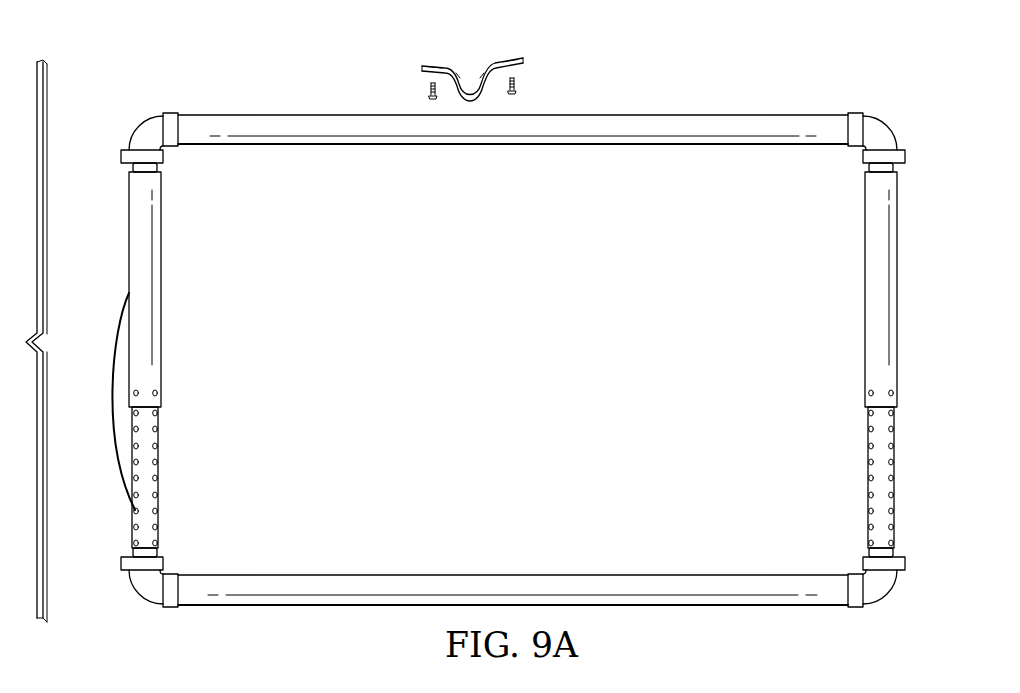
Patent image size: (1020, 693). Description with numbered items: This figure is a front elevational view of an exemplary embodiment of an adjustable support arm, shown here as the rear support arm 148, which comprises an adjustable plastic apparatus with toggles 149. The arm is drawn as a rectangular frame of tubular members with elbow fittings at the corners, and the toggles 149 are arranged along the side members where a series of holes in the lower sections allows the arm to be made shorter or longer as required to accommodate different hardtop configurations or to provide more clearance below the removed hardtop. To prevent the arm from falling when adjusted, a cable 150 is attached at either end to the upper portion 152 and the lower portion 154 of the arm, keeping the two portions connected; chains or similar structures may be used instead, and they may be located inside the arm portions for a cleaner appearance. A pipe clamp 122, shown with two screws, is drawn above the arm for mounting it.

The pipe clamp 122 is at (406, 62).
The rear support arm 148 is at (203, 105).
The toggles 149 is at (170, 391).
The cable 150 is at (118, 332).
The upper portion 152 is at (129, 213).
The lower portion 154 is at (768, 606).